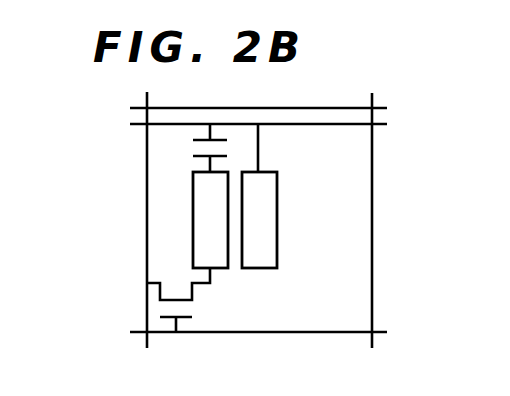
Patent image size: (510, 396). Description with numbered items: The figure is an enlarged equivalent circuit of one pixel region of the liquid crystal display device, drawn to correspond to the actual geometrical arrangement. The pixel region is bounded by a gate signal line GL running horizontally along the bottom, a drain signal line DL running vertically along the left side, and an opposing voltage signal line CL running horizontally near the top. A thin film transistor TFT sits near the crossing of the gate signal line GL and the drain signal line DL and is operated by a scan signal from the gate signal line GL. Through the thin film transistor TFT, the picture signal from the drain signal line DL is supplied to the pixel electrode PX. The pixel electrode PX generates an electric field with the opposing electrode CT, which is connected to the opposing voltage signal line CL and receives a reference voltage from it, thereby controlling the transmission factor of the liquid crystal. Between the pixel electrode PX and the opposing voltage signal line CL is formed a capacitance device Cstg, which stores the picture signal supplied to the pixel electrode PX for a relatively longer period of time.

The drain signal line DL is at (147, 270).
The opposing voltage signal line CL is at (340, 124).
The gate signal line GL is at (323, 332).
The capacitance device Cstg is at (177, 143).
The pixel electrode PX is at (193, 227).
The opposing electrode CT is at (277, 213).
The thin film transistor TFT is at (208, 305).